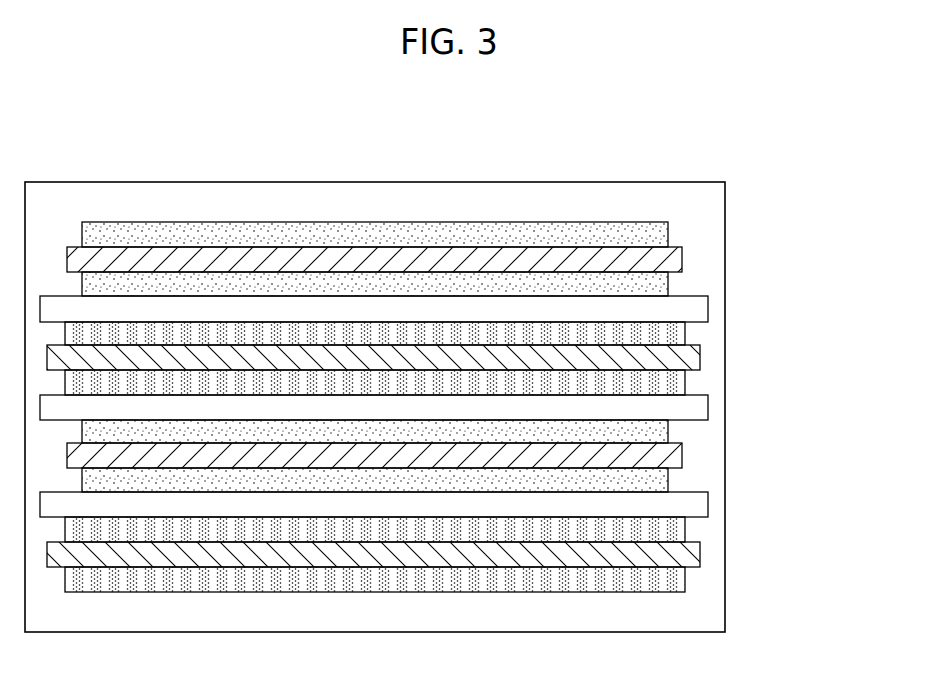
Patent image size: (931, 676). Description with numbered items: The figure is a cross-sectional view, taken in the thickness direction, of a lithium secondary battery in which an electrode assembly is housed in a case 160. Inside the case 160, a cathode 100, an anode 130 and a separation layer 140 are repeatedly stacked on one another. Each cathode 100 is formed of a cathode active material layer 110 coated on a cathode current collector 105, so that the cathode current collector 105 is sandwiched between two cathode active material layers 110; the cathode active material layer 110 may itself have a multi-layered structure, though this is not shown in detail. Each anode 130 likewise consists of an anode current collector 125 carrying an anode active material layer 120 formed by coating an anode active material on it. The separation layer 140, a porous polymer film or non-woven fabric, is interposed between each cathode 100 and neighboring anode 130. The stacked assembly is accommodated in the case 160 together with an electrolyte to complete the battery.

The cathode 100 is at (469, 356).
The cathode current collector 105 is at (673, 258).
The cathode active material layer 110 is at (660, 233).
The anode active material layer 120 is at (685, 328).
The anode current collector 125 is at (693, 360).
The anode 130 is at (461, 455).
The separation layer 140 is at (577, 305).
The case 160 is at (725, 553).